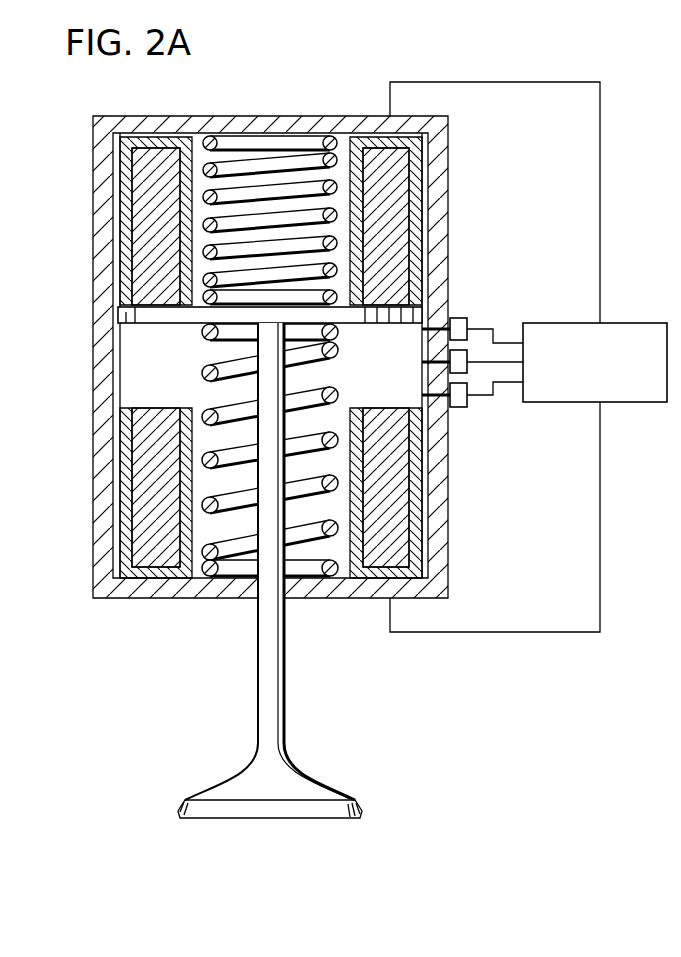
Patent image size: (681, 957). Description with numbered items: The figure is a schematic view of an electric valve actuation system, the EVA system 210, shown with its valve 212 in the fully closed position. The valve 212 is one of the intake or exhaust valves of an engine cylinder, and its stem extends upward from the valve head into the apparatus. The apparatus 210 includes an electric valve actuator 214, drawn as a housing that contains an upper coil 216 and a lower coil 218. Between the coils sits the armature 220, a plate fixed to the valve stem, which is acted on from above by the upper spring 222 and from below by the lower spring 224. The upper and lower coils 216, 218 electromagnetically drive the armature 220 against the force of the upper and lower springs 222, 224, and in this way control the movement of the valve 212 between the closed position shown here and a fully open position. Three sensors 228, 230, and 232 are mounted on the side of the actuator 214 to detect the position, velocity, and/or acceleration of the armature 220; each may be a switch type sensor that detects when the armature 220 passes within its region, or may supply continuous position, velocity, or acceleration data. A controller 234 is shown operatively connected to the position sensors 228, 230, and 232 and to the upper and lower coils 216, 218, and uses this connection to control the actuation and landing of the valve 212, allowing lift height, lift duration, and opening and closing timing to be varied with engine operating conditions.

The EVA system 210 is at (441, 66).
The valve 212 is at (320, 782).
The electric valve actuator 214 is at (93, 368).
The upper coil 216 is at (145, 223).
The lower coil 218 is at (145, 492).
The armature 220 is at (143, 313).
The upper spring 222 is at (275, 137).
The lower spring 224 is at (305, 533).
The sensor 228 is at (467, 353).
The sensor 230 is at (457, 407).
The sensor 232 is at (457, 317).
The controller 234 is at (636, 402).